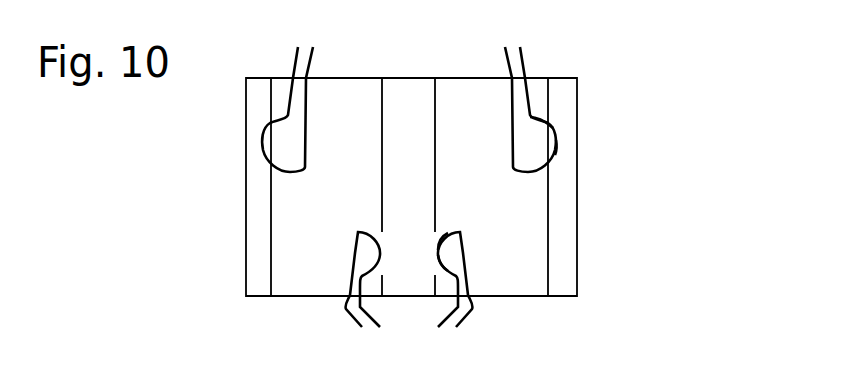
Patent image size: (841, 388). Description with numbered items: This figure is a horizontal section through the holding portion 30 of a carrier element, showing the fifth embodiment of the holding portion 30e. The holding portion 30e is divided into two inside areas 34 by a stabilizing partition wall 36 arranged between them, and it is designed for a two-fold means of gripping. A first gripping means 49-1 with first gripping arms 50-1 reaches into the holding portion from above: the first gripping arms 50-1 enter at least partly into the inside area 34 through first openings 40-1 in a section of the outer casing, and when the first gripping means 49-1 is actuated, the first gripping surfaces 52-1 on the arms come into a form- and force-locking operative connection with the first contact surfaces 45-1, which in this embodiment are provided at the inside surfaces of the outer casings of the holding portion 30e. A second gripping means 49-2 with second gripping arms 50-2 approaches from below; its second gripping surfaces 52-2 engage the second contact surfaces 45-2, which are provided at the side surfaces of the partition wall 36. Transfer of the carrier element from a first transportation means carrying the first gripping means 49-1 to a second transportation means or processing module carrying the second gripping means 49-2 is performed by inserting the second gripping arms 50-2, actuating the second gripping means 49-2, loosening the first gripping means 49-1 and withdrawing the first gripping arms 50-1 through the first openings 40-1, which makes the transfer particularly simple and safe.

The holding portion 30 is at (265, 100).
The holding portion 30e is at (619, 318).
The inside area 34 is at (458, 97).
The partition wall 36 is at (400, 100).
The first opening 40-1 is at (338, 78).
The first gripping means 49-1 is at (598, 90).
The first gripping arm 50-1 is at (518, 48).
The first gripping surface 52-1 is at (558, 132).
The first contact surface 45-1 is at (558, 147).
The second gripping means 49-2 is at (286, 300).
The second gripping arm 50-2 is at (353, 318).
The second gripping surface 52-2 is at (440, 260).
The second contact surface 45-2 is at (440, 265).